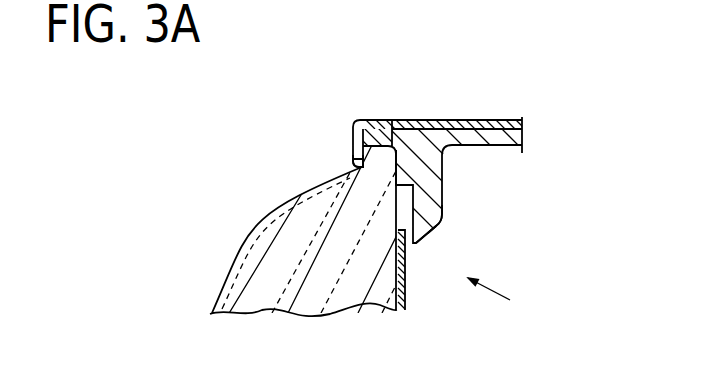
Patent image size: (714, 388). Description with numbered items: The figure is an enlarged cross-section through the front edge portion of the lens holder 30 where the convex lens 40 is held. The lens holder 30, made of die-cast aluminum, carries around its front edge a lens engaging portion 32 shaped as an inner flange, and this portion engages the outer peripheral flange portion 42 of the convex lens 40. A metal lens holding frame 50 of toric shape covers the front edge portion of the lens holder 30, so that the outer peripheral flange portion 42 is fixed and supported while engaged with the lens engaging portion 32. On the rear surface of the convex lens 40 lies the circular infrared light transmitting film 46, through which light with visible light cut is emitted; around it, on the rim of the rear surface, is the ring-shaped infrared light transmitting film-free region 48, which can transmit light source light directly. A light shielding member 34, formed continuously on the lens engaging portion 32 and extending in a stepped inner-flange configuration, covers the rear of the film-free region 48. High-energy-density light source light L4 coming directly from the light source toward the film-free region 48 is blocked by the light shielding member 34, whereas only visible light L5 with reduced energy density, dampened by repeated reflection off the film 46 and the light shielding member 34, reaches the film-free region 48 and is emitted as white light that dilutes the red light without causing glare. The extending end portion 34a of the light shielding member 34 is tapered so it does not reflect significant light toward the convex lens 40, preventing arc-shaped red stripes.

The lens holder 30 is at (523, 133).
The lens engaging portion 32 is at (391, 119).
The light shielding member 34 is at (443, 188).
The extending end portion 34a is at (418, 241).
The convex lens 40 is at (252, 262).
The outer peripheral flange portion 42 is at (353, 148).
The infrared light transmitting film 46 is at (404, 300).
The infrared light transmitting film-free region 48 is at (449, 221).
The lens holding frame 50 is at (450, 119).
The light source light L4 is at (447, 219).
The visible light L5 is at (445, 218).